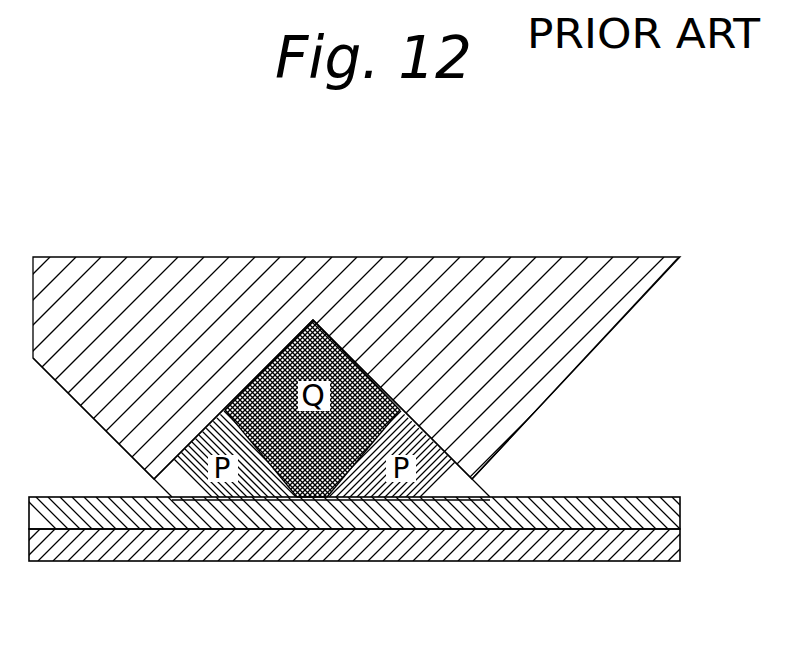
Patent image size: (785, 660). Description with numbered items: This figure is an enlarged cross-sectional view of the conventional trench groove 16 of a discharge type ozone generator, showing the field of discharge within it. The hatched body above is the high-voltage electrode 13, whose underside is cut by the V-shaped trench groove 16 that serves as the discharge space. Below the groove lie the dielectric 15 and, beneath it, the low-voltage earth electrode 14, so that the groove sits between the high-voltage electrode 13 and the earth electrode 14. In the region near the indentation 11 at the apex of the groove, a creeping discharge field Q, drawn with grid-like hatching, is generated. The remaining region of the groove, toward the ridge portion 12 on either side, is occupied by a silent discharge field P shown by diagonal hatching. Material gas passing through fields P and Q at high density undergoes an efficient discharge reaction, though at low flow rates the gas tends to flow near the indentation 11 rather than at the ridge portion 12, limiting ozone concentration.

The indentation 11 is at (313, 320).
The ridge portion 12 is at (472, 478).
The high-voltage electrode 13 is at (193, 351).
The low-voltage earth electrode 14 is at (495, 542).
The dielectric 15 is at (612, 518).
The trench groove 16 is at (293, 497).